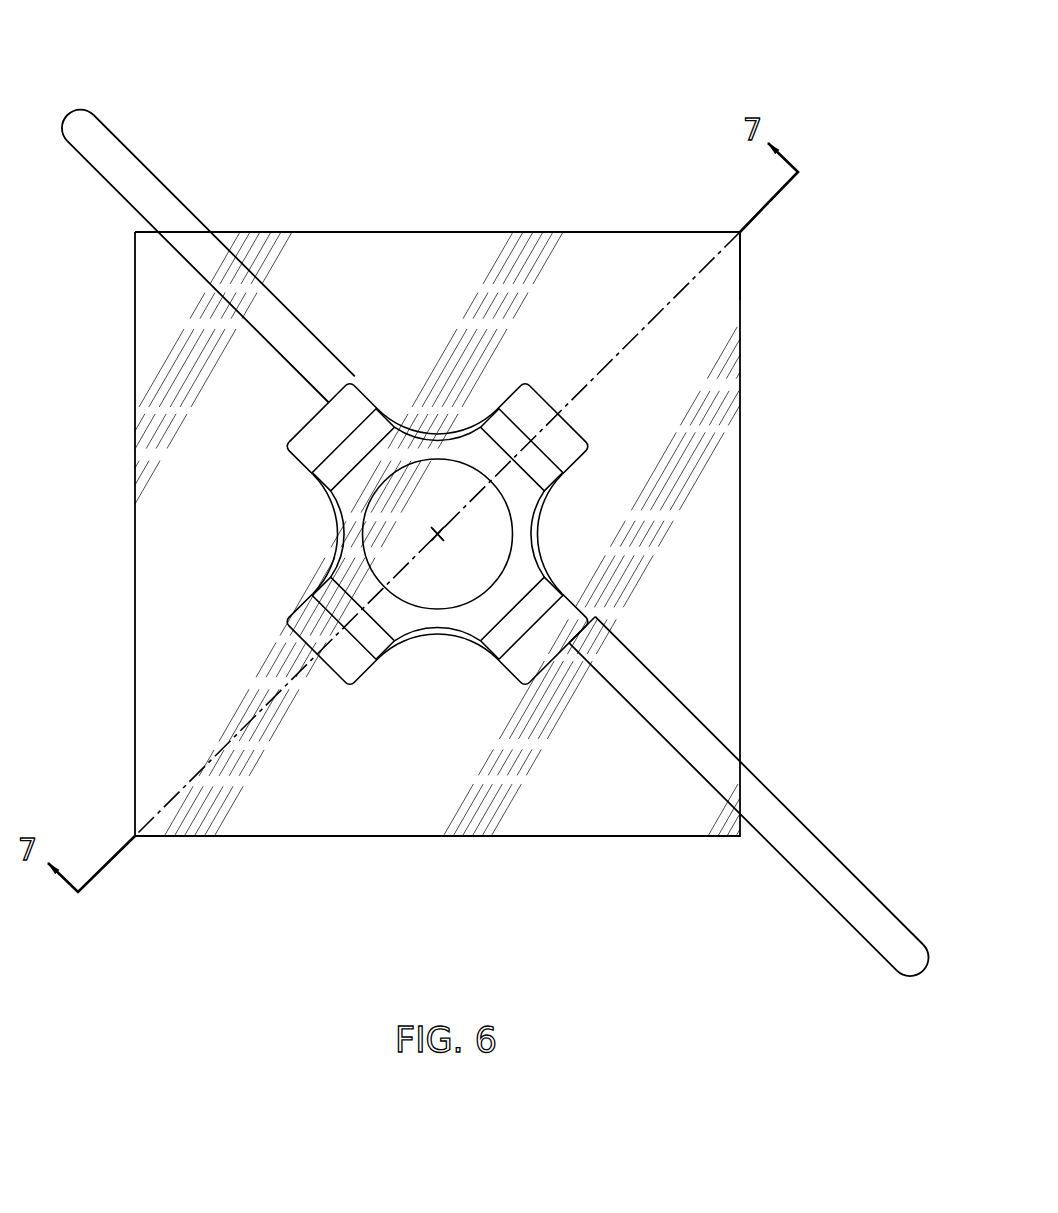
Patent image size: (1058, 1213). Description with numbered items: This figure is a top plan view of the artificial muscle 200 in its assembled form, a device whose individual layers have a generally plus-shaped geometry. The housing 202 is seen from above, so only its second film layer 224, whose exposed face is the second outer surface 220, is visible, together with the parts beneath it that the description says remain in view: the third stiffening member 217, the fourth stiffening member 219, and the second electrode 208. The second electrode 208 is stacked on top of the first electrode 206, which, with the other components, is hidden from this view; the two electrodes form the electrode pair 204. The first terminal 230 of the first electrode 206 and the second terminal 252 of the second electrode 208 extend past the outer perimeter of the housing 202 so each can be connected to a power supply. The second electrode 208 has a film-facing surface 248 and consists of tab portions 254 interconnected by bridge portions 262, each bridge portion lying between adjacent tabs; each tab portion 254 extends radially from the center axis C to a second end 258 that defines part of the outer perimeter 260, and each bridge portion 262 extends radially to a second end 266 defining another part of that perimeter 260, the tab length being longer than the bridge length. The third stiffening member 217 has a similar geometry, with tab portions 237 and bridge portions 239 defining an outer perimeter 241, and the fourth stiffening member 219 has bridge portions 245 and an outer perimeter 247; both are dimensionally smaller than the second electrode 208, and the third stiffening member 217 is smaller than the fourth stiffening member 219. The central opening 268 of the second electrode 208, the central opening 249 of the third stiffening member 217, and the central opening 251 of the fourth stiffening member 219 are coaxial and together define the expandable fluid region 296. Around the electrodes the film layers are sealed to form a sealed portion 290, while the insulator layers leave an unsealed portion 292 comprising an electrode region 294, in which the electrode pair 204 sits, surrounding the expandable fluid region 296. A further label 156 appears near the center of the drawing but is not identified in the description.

The fastener opening 156 is at (500, 571).
The artificial muscle 200 is at (427, 119).
The housing 202 is at (341, 222).
The electrode pair 204 is at (863, 850).
The first electrode 206 is at (119, 97).
The second electrode 208 is at (794, 749).
The third stiffening member 217 is at (527, 573).
The fourth stiffening member 219 is at (558, 596).
The second outer surface 220 is at (612, 236).
The second film layer 224 is at (580, 203).
The first terminal 230 is at (108, 138).
The tab portions 237 is at (563, 442).
The bridge portions 239 is at (463, 437).
The outer perimeter 241 is at (510, 389).
The bridge portions 245 is at (447, 640).
The outer perimeter 247 is at (530, 655).
The film-facing surface 248 is at (545, 655).
The central opening 249 is at (380, 563).
The central opening 251 is at (406, 596).
The second terminal 252 is at (809, 830).
The tab portions 254 is at (294, 422).
The second end 258 is at (292, 447).
The outer perimeter 260 is at (295, 465).
The bridge portions 262 is at (329, 512).
The second end 266 is at (336, 540).
The central opening 268 is at (437, 600).
The sealed portion 290 is at (153, 602).
The unsealed portion 292 is at (368, 680).
The electrode region 294 is at (567, 489).
The expandable fluid region 296 is at (421, 484).
The center axis C is at (440, 532).